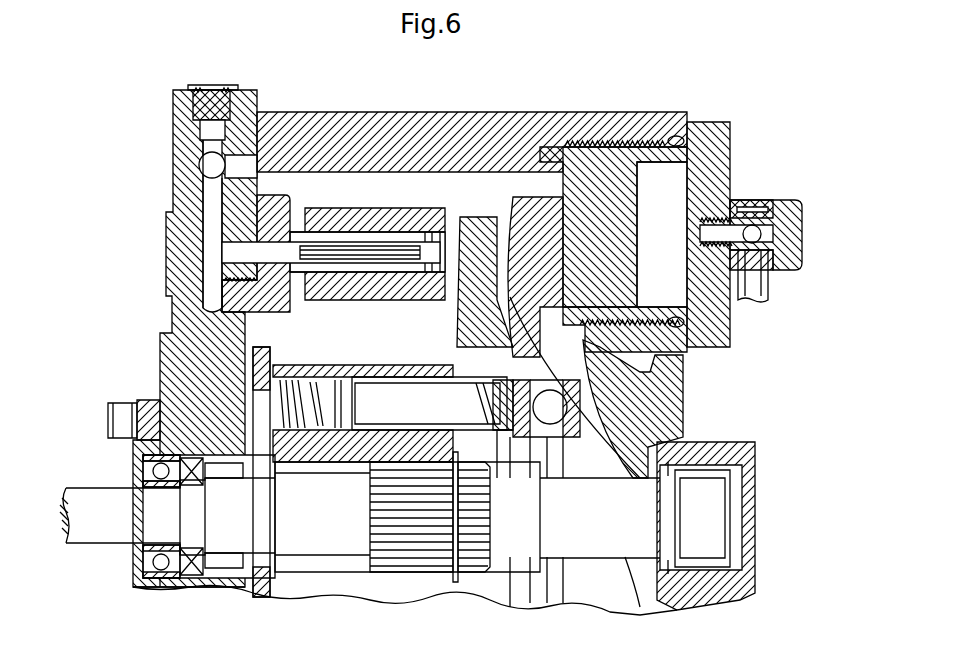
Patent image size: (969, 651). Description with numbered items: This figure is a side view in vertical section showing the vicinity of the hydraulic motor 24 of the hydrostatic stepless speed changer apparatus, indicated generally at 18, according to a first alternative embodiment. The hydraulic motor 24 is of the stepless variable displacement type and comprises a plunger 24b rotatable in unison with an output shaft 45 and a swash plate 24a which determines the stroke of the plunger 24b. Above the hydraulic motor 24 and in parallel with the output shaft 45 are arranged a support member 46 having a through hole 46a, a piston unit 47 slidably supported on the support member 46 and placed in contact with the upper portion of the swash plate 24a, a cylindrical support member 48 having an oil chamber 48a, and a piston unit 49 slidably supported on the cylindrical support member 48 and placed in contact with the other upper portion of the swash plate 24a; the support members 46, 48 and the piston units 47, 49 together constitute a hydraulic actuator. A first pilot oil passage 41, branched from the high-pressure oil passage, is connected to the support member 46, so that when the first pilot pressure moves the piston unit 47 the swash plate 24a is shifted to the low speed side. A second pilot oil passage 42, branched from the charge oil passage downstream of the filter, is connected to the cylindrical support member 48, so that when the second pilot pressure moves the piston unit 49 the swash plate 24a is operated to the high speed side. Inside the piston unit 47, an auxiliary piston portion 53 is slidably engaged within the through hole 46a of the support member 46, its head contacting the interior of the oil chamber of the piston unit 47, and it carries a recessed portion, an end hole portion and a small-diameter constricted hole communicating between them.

The motor unit 18 is at (136, 96).
The first pilot oil passage 41 is at (205, 197).
The second pilot oil passage 42 is at (757, 298).
The output shaft 45 is at (95, 490).
The support member 46 is at (274, 312).
The through hole 46a is at (237, 254).
The piston unit 47 is at (367, 208).
The cylindrical support member 48 is at (627, 142).
The oil chamber 48a is at (673, 185).
The piston unit 49 is at (512, 198).
The auxiliary piston portion 53 is at (423, 246).
The hydraulic motor 24 is at (368, 358).
The swash plate 24a is at (600, 400).
The plunger 24b is at (480, 377).